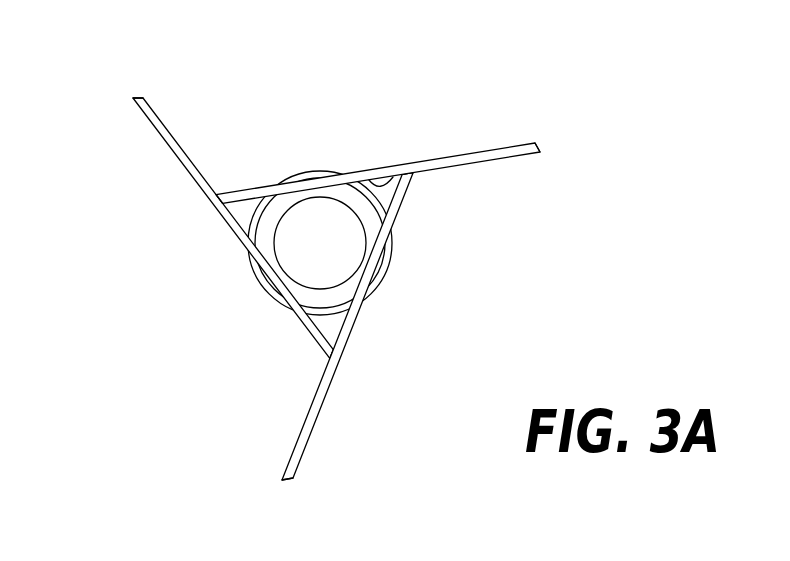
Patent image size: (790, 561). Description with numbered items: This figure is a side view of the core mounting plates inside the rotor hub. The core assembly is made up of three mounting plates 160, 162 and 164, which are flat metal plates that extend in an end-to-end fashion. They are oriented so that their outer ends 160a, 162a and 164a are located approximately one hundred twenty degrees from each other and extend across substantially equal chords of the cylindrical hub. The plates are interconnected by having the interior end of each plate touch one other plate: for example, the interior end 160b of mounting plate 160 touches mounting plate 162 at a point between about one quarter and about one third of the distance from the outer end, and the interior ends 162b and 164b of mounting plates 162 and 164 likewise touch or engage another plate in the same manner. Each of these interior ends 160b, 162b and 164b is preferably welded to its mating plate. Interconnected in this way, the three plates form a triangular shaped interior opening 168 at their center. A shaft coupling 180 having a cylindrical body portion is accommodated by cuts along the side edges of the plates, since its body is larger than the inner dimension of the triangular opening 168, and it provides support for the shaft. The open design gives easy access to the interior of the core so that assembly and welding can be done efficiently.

The mounting plate 160 is at (153, 130).
The outer end of mounting plate 160a is at (133, 97).
The interior end of mounting plate 160b is at (328, 355).
The mounting plate 162 is at (522, 145).
The outer end of mounting plate 162a is at (540, 152).
The interior end of mounting plate 162b is at (218, 195).
The mounting plate 164 is at (288, 409).
The outer end of mounting plate 164a is at (283, 480).
The interior end of mounting plate 164b is at (413, 173).
The triangular shaped interior opening 168 is at (367, 172).
The shaft coupling 180 is at (389, 269).